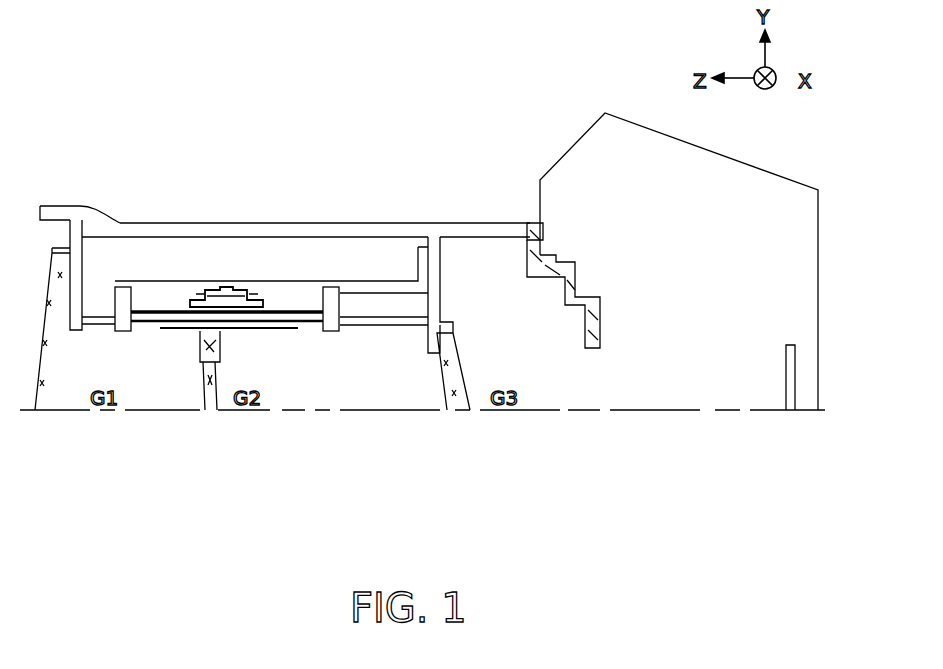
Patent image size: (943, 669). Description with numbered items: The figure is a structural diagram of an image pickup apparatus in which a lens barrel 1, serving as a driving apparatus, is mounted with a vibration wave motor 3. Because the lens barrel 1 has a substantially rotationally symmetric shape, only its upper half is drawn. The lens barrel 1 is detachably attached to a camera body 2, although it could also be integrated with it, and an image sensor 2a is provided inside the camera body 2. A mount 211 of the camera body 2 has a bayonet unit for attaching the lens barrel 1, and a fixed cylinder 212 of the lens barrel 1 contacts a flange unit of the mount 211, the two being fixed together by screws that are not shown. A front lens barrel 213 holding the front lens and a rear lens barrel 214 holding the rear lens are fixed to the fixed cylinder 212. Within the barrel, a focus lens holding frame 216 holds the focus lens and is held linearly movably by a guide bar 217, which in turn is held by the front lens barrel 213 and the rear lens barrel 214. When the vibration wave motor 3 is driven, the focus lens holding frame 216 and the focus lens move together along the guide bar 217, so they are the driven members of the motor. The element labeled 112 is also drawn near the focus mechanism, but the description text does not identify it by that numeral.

The lens barrel 1 is at (303, 188).
The camera body 2 is at (592, 128).
The image sensor 2a is at (783, 368).
The vibration wave motor 3 is at (290, 333).
The clamp block 112 is at (120, 287).
The mount 211 is at (533, 225).
The fixed cylinder 212 is at (483, 222).
The front lens barrel 213 is at (73, 215).
The rear lens barrel 214 is at (427, 247).
The focus lens holding frame 216 is at (195, 410).
The guide bar 217 is at (372, 317).